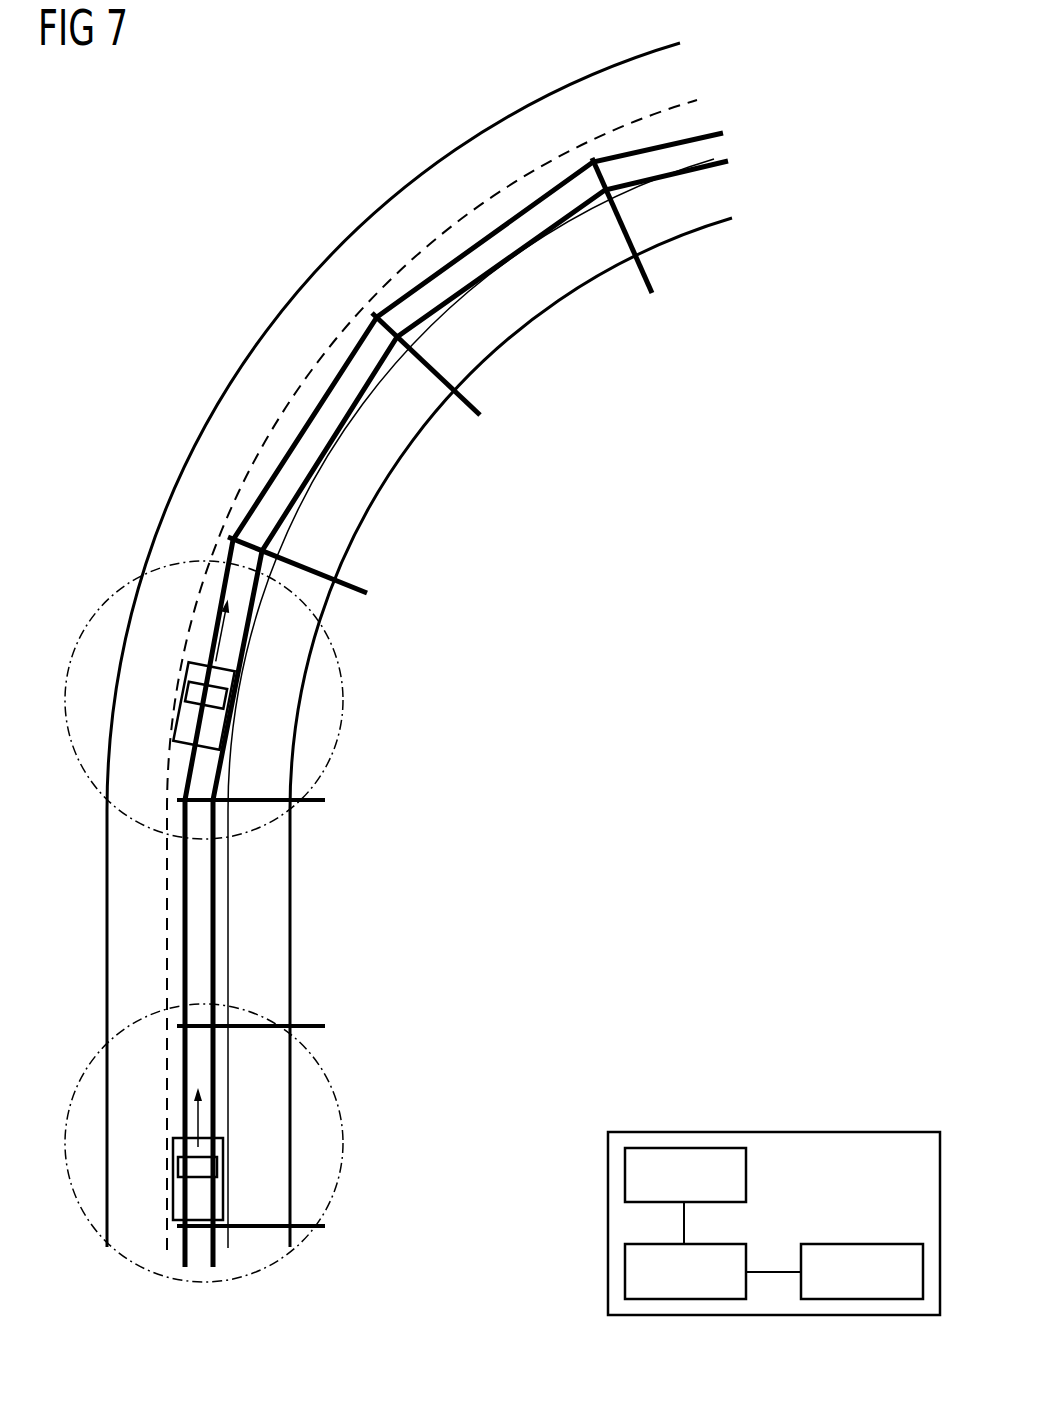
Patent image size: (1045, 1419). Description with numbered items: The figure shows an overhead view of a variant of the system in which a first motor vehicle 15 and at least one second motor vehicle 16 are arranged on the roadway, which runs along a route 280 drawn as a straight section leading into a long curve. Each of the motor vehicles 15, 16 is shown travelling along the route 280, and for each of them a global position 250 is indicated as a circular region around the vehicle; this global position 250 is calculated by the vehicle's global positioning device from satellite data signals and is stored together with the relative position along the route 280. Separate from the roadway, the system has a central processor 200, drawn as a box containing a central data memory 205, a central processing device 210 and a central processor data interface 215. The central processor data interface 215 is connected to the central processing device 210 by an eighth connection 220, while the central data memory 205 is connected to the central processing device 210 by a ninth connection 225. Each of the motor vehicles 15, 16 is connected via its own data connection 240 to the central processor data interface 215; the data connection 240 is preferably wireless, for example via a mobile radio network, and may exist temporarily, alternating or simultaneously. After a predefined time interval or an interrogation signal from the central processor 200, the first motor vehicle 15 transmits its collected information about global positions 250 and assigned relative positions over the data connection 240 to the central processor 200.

The first motor vehicle 15 is at (228, 1152).
The second motor vehicle 16 is at (190, 724).
The central processor 200 is at (822, 1132).
The central data memory 205 is at (872, 1299).
The central processing device 210 is at (698, 1299).
The central processor data interface 215 is at (625, 1178).
The eighth connection 220 is at (684, 1224).
The ninth connection 225 is at (780, 1272).
The data connection 240 is at (228, 735).
The global position 250 is at (346, 710).
The route 280 is at (197, 922).